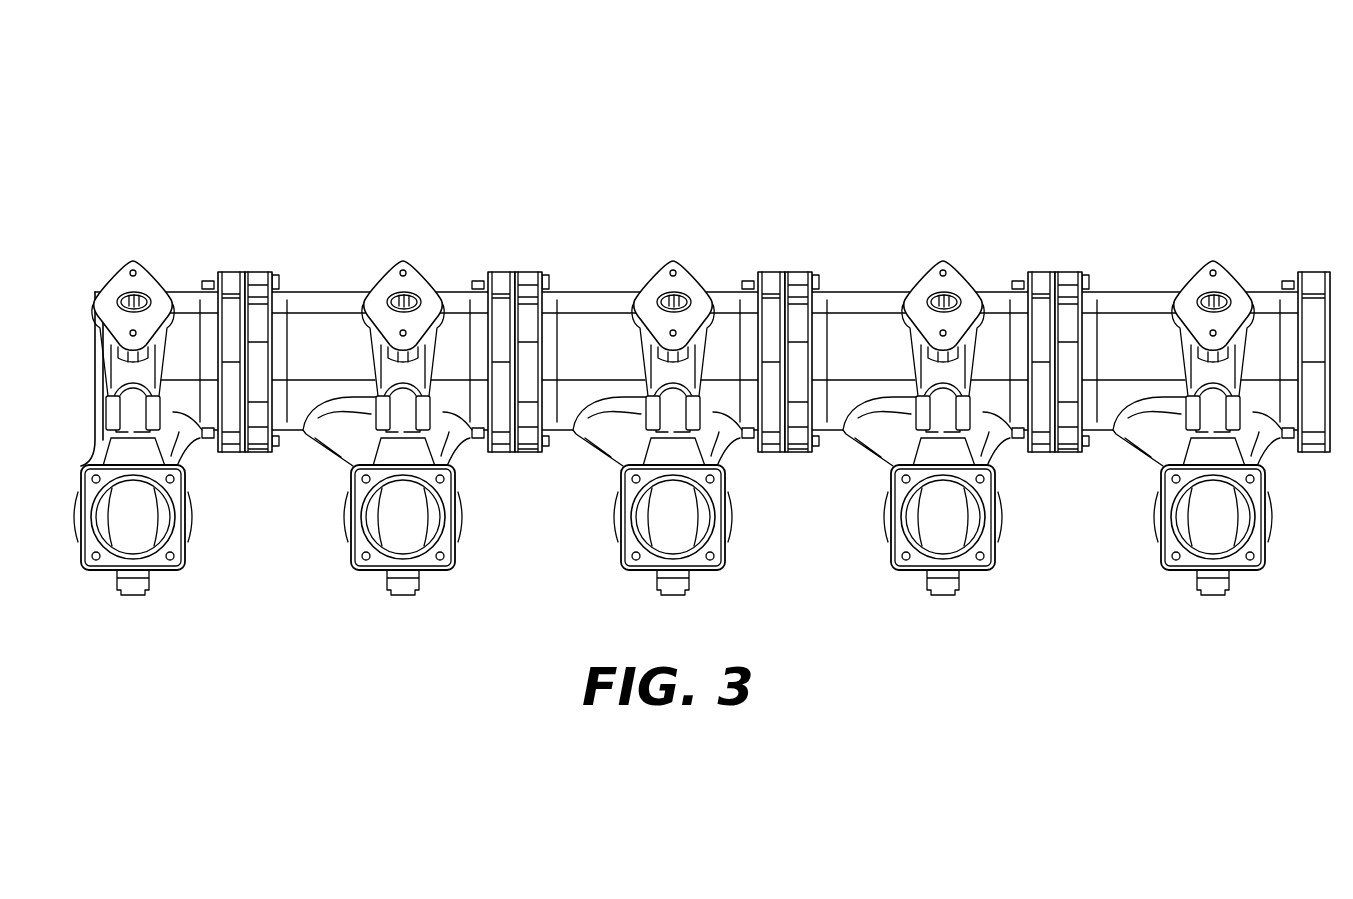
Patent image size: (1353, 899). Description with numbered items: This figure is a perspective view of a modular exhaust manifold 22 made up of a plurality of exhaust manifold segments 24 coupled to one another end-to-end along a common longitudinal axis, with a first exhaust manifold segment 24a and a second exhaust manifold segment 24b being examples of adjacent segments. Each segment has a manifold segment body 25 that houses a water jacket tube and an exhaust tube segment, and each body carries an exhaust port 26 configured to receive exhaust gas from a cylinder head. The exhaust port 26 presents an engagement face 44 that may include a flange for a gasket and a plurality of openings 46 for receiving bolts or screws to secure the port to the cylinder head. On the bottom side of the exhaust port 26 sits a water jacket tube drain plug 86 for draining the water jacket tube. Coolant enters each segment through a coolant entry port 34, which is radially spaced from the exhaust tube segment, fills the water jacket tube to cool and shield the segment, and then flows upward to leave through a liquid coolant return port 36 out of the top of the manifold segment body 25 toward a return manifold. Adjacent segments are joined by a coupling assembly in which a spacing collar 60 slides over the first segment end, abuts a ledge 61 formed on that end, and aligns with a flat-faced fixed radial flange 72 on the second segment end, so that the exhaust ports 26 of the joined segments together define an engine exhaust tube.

The modular exhaust manifold 22 is at (172, 112).
The exhaust manifold segment 24 is at (299, 250).
The first exhaust manifold segment 24a is at (875, 272).
The second exhaust manifold segment 24b is at (609, 272).
The manifold segment body 25 is at (451, 298).
The exhaust port 26 is at (354, 500).
The coolant entry port 34 is at (383, 422).
The liquid coolant return port 36 is at (406, 297).
The engagement face 44 is at (361, 540).
The openings 46 is at (441, 478).
The spacing collar 60 is at (525, 274).
The ledge 61 is at (541, 286).
The fixed radial flange 72 is at (774, 307).
The water jacket tube drain plug 86 is at (406, 594).